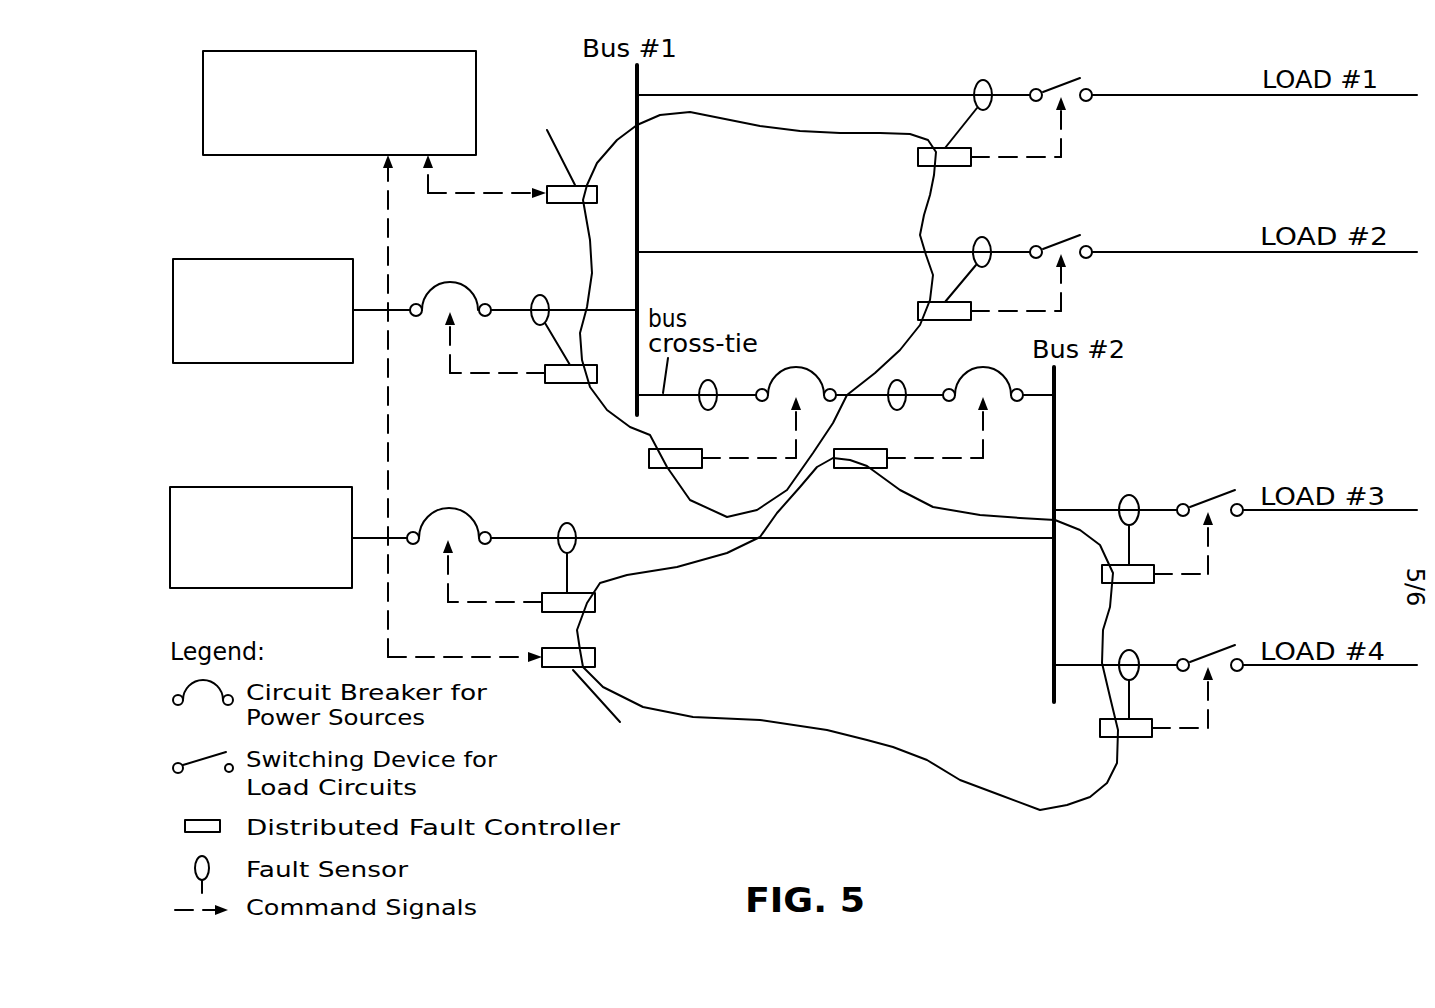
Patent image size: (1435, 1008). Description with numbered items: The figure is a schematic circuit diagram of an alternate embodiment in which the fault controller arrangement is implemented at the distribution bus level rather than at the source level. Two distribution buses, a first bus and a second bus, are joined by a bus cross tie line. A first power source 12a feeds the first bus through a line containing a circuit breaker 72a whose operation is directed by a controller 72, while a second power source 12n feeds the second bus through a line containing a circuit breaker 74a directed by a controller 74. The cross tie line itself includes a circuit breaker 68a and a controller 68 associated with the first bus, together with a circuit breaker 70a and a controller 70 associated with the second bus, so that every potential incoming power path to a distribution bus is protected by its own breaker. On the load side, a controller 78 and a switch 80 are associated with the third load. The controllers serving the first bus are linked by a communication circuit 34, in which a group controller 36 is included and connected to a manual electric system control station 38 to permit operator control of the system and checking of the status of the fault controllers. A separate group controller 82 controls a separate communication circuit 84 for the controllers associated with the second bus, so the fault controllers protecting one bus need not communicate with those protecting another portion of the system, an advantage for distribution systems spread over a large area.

The manual electric system control station 38 is at (240, 157).
The power source 12a is at (277, 258).
The power source 12n is at (237, 487).
The circuit breaker 72a is at (445, 281).
The controller 72 is at (560, 386).
The group controller 36 is at (562, 205).
The communication circuit 34 is at (824, 122).
The circuit breaker 68a is at (805, 365).
The controller 68 is at (702, 463).
The circuit breaker 70a is at (970, 374).
The controller 70 is at (887, 463).
The circuit breaker 74a is at (447, 508).
The controller 74 is at (540, 605).
The group controller 82 is at (596, 655).
The communication circuit 84 is at (862, 746).
The switch 80 is at (1198, 500).
The controller 78 is at (1154, 583).